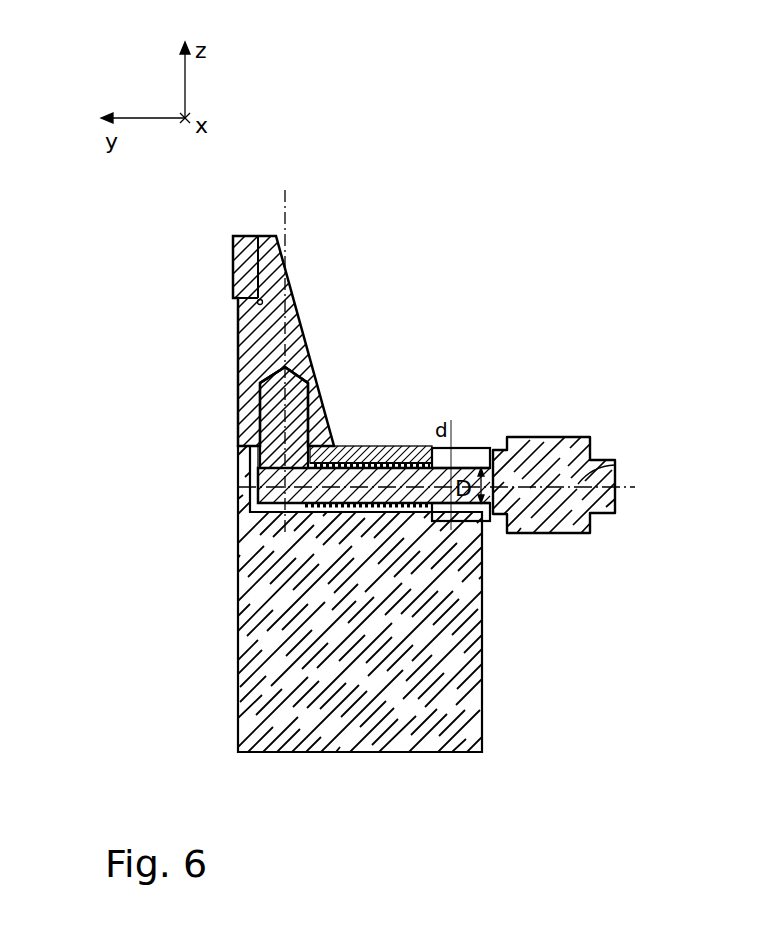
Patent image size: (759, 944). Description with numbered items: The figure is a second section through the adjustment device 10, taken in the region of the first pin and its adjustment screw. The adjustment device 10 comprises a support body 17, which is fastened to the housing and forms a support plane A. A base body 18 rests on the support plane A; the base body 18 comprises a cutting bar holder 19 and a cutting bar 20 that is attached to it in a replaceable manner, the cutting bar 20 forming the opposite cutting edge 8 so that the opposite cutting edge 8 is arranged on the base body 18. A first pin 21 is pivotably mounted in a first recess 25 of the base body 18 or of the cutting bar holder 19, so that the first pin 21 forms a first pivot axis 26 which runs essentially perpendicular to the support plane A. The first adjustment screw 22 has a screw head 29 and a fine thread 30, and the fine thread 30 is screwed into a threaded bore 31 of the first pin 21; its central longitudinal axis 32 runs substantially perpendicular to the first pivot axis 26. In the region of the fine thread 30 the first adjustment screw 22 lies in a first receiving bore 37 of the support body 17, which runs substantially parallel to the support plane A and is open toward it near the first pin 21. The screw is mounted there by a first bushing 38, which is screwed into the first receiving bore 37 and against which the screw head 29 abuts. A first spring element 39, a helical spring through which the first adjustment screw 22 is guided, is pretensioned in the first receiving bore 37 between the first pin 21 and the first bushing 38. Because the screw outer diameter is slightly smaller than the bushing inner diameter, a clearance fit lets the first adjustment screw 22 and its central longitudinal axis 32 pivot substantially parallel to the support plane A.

The opposite cutting edge 8 is at (233, 237).
The adjustment device 10 is at (316, 214).
The support body 17 is at (229, 616).
The base body 18 is at (314, 299).
The cutting bar holder 19 is at (270, 272).
The cutting bar 20 is at (245, 268).
The first pin 21 is at (277, 410).
The first adjustment screw 22 is at (630, 459).
The first recess 25 is at (278, 378).
The first pivot axis 26 is at (283, 207).
The screw head 29 is at (580, 498).
The fine thread 30 is at (258, 508).
The threaded bore 31 is at (260, 483).
The central longitudinal axis 32 is at (580, 480).
The first receiving bore 37 is at (410, 450).
The first bushing 38 is at (493, 448).
The first spring element 39 is at (382, 448).
The support plane A is at (340, 446).